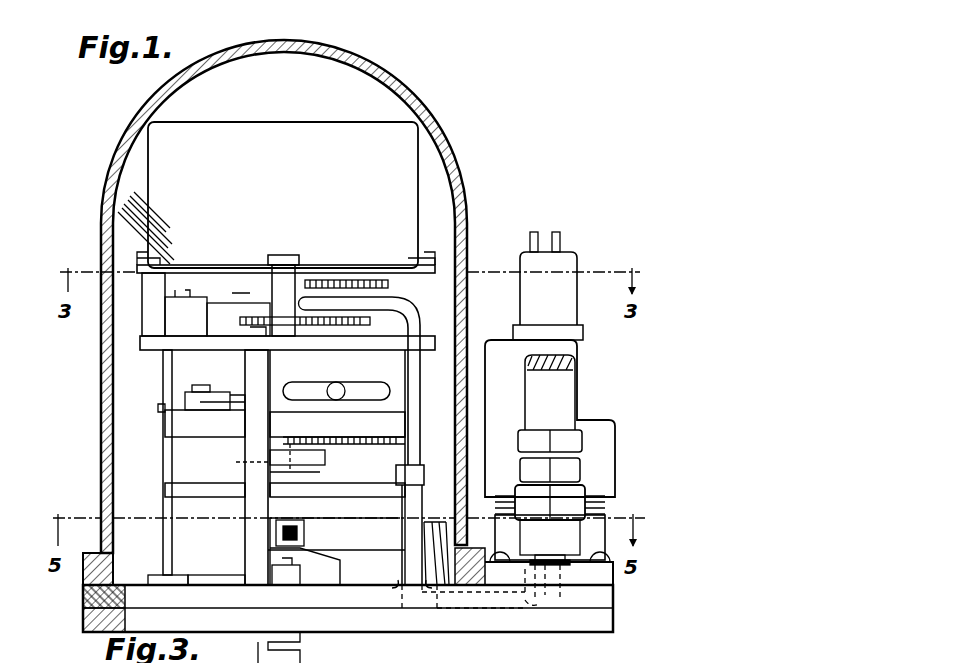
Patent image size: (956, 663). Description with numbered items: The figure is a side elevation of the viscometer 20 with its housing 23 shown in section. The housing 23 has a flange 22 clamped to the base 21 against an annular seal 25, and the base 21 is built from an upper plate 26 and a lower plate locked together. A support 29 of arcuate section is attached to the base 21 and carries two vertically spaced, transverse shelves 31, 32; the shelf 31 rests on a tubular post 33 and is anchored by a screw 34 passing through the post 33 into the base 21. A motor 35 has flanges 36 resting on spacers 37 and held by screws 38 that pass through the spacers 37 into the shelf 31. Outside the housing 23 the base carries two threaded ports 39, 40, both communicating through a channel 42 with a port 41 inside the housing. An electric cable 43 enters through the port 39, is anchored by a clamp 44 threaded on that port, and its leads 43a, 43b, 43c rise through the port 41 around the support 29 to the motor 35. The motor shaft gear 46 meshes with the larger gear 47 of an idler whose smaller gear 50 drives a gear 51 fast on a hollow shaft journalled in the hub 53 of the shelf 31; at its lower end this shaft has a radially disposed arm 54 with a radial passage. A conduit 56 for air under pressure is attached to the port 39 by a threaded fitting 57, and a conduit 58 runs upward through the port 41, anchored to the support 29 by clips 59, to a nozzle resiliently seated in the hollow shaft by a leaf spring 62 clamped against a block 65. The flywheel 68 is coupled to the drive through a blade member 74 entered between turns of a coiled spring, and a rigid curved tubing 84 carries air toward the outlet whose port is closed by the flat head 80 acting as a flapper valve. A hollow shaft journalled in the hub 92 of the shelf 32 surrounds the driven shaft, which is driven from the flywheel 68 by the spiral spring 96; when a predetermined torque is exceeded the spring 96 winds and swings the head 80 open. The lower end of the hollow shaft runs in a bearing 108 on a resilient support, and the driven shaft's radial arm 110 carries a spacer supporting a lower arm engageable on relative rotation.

The viscometer 20 is at (101, 482).
The base 21 is at (80, 620).
The flange 22 is at (90, 568).
The housing 23 is at (428, 132).
The annular seal 25 is at (105, 597).
The upper plate 26 is at (100, 626).
The support 29 is at (175, 380).
The shelf 31 is at (190, 342).
The shelf 32 is at (208, 490).
The tubular post 33 is at (250, 547).
The screw 34 is at (245, 334).
The motor 35 is at (238, 118).
The flanges 36 is at (145, 262).
The spacers 37 is at (152, 284).
The screws 38 is at (130, 258).
The threaded port 39 is at (596, 520).
The threaded port 40 is at (566, 564).
The port 41 is at (412, 610).
The channel 42 is at (455, 610).
The electric cable 43 is at (566, 264).
The cable lead 43a is at (152, 214).
The cable lead 43b is at (160, 222).
The cable lead 43c is at (170, 242).
The clamp 44 is at (600, 444).
The gear 46 is at (264, 260).
The larger gear 47 is at (370, 282).
The smaller gear 50 is at (385, 325).
The gear 51 is at (246, 316).
The hub 53 is at (306, 360).
The radially disposed arm 54 is at (296, 396).
The conduit 56 is at (566, 372).
The threaded fitting 57 is at (572, 498).
The conduit 58 is at (503, 610).
The clips 59 is at (418, 476).
The leaf spring 62 is at (207, 304).
The block 65 is at (182, 318).
The flywheel 68 is at (176, 422).
The blade member 74 is at (332, 446).
The flat head 80 is at (200, 400).
The curved tubing 84 is at (326, 394).
The hub 92 is at (310, 516).
The spiral spring 96 is at (318, 466).
The bearing 108 is at (290, 585).
The radial arm 110 is at (320, 556).